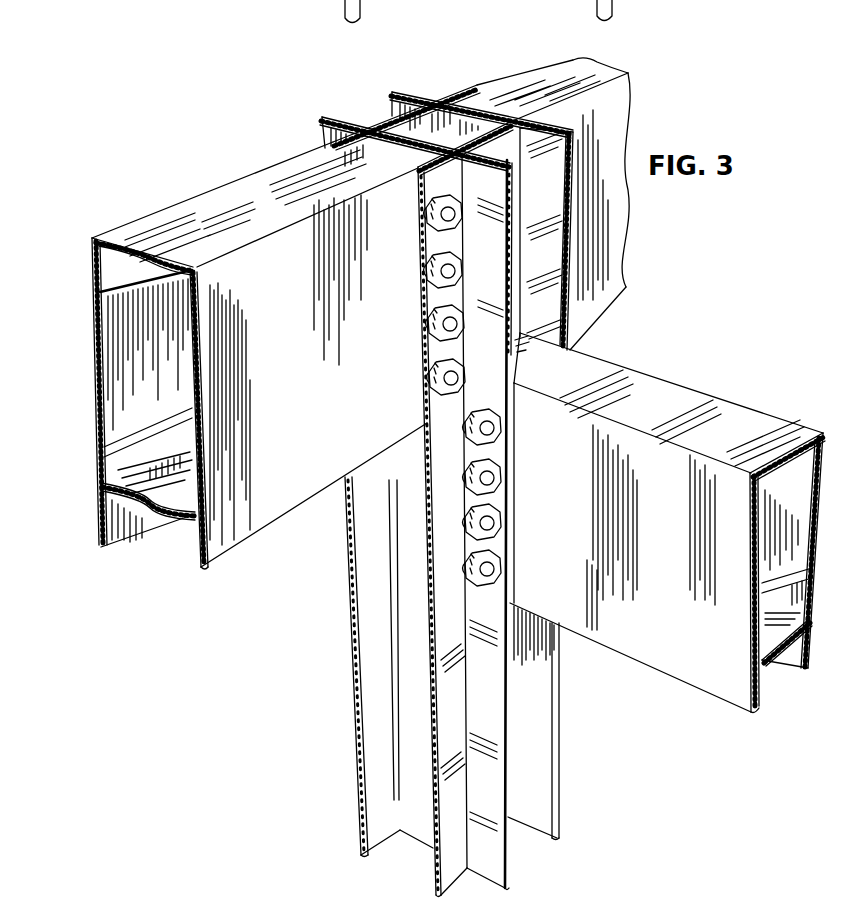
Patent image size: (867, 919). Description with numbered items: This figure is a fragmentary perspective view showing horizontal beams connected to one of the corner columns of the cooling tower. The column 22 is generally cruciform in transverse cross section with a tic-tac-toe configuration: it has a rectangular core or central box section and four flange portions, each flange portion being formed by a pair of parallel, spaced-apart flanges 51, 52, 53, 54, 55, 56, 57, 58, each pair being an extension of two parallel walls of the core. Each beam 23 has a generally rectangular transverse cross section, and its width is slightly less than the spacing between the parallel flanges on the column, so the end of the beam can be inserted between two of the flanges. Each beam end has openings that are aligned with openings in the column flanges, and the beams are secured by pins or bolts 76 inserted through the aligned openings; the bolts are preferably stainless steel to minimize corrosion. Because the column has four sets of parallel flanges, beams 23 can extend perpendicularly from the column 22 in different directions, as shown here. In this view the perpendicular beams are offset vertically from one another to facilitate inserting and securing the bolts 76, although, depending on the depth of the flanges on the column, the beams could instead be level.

The column 22 is at (566, 236).
The beam 23 is at (205, 200).
The flange 51 is at (473, 84).
The flange 52 is at (528, 128).
The flange 53 is at (560, 745).
The flange 54 is at (507, 853).
The flange 55 is at (432, 853).
The flange 56 is at (362, 781).
The flange 57 is at (322, 133).
The flange 58 is at (392, 92).
The bolts 76 is at (427, 250).